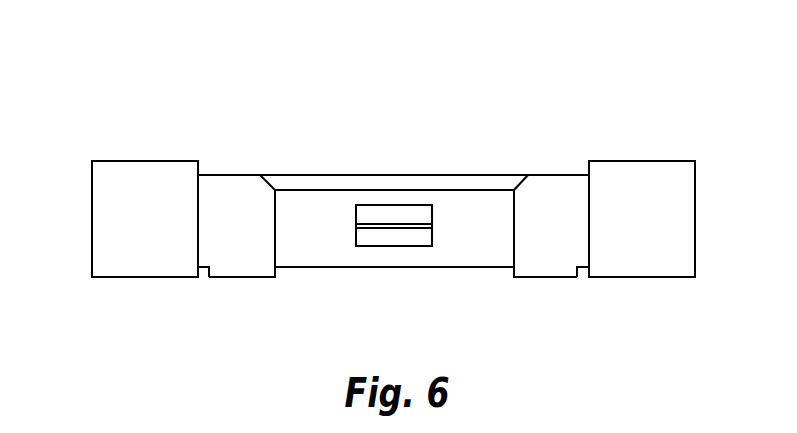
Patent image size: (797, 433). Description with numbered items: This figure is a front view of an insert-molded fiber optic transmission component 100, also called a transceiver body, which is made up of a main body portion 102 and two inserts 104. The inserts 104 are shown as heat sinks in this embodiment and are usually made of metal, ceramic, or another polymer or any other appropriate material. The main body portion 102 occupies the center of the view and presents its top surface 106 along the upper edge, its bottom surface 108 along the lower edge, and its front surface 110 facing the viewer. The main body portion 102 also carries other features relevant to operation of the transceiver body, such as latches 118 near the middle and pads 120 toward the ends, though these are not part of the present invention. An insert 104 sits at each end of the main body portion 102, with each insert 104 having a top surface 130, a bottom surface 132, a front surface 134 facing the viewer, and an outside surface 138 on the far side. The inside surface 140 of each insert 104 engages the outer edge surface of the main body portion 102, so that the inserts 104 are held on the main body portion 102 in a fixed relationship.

The insert-molded fiber optic transmission component 100 is at (413, 105).
The main body portion 102 is at (494, 175).
The insert 104 is at (151, 161).
The top surface 106 is at (350, 175).
The bottom surface 108 is at (316, 267).
The front surface 110 is at (543, 189).
The latches 118 is at (393, 230).
The pads 120 is at (236, 277).
The top surface 130 is at (123, 161).
The bottom surface 132 is at (145, 277).
The front surface 134 is at (118, 250).
The outside surface 138 is at (92, 210).
The inside surface 140 is at (208, 170).